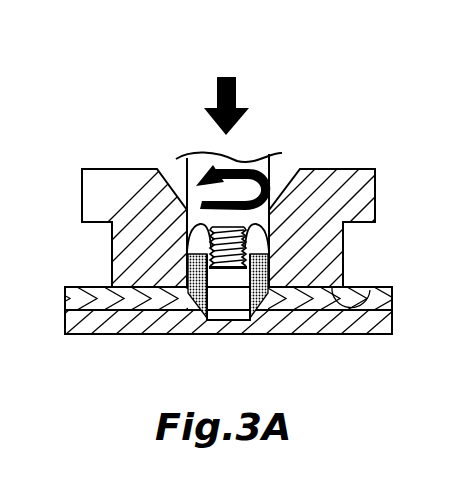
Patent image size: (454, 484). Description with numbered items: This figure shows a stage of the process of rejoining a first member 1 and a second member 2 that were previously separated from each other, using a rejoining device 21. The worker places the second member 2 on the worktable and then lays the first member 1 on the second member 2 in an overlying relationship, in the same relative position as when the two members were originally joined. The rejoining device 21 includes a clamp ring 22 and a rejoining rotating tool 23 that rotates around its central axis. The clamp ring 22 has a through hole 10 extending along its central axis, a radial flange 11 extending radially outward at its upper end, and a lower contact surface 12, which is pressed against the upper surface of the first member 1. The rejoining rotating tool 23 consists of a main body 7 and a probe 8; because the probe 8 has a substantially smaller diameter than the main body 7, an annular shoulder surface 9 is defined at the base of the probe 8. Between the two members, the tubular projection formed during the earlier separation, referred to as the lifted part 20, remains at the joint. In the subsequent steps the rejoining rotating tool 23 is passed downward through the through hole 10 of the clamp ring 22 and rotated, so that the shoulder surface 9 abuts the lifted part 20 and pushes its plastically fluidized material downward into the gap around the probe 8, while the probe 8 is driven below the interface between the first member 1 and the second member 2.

The first member 1 is at (66, 298).
The second member 2 is at (72, 322).
The main body 7 is at (196, 163).
The probe 8 is at (225, 268).
The shoulder surface 9 is at (187, 240).
The through hole 10 is at (259, 264).
The radial flange 11 is at (363, 192).
The contact surface 12 is at (369, 290).
The lifted part 20 is at (193, 300).
The rejoining device 21 is at (116, 110).
The clamp ring 22 is at (355, 158).
The rejoining rotating tool 23 is at (268, 144).